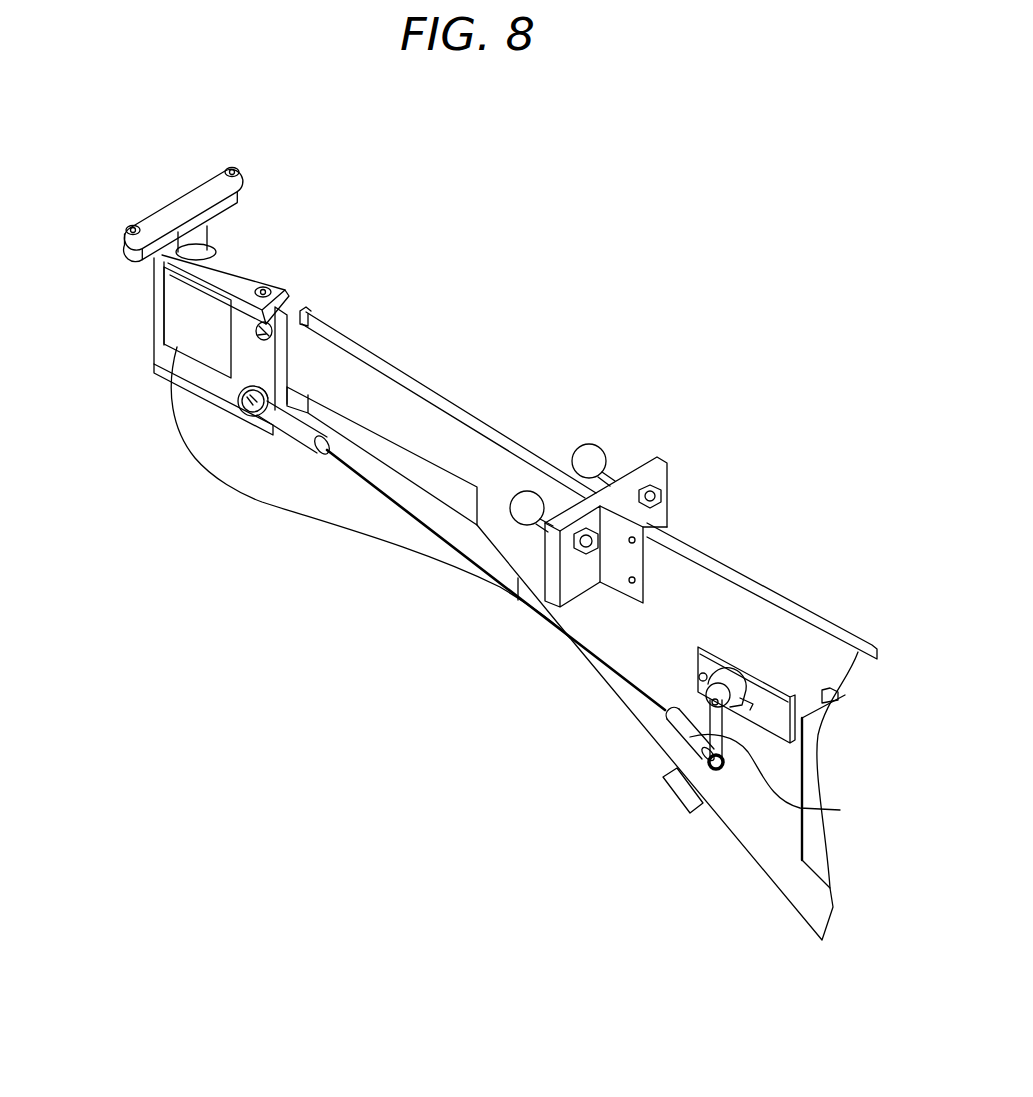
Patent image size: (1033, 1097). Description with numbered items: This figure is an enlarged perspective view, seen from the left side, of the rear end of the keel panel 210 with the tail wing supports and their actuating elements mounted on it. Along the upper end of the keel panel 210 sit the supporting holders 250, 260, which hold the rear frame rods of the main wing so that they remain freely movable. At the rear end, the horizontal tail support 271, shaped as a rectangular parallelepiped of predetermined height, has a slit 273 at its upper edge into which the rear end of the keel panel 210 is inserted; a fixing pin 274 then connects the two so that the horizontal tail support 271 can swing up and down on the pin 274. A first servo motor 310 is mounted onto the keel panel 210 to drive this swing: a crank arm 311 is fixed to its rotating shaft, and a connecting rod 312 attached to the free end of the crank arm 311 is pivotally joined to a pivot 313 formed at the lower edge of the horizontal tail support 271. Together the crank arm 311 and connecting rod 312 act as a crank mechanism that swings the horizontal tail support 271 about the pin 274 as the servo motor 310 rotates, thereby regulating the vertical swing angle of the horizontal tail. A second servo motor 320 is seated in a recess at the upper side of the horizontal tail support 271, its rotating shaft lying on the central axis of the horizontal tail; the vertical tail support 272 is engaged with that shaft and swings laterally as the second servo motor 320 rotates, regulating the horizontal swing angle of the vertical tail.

The keel panel 210 is at (777, 617).
The supporting holder 250 is at (572, 570).
The supporting holder 260 is at (653, 460).
The horizontal tail support 271 is at (162, 347).
The vertical tail support 272 is at (199, 183).
The slit 273 is at (298, 397).
The fixing pin 274 is at (293, 303).
The first servo motor 310 is at (774, 703).
The crank arm 311 is at (800, 811).
The connecting rod 312 is at (683, 727).
The pivot 313 is at (250, 414).
The second servo motor 320 is at (237, 262).